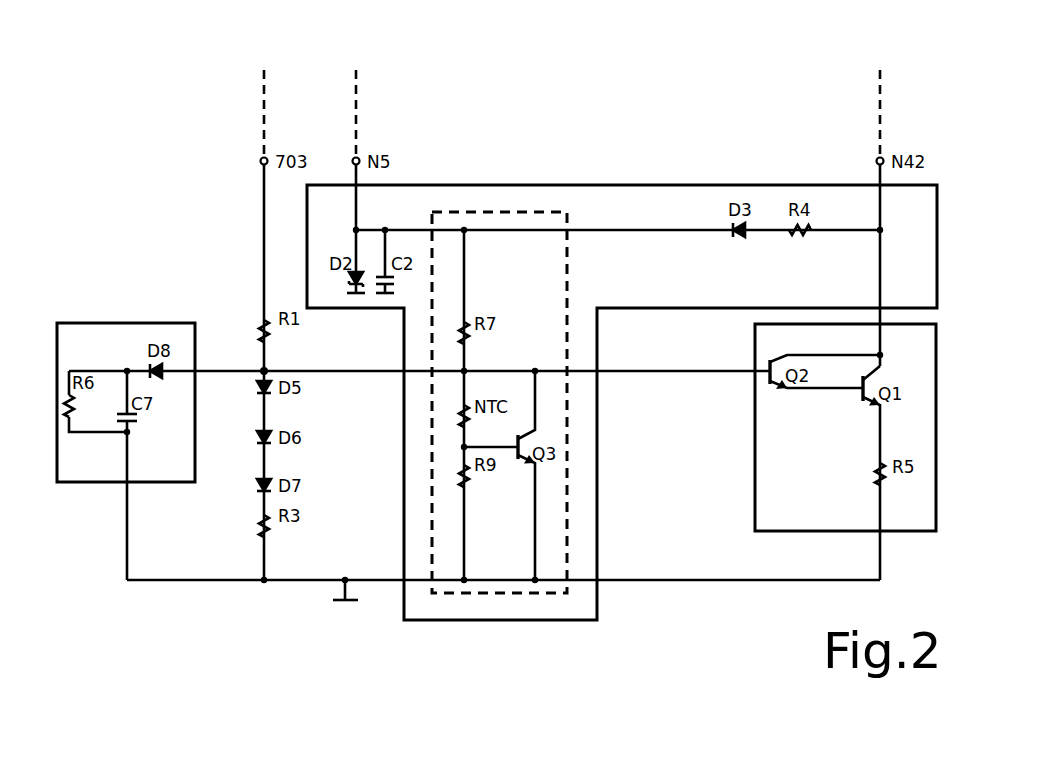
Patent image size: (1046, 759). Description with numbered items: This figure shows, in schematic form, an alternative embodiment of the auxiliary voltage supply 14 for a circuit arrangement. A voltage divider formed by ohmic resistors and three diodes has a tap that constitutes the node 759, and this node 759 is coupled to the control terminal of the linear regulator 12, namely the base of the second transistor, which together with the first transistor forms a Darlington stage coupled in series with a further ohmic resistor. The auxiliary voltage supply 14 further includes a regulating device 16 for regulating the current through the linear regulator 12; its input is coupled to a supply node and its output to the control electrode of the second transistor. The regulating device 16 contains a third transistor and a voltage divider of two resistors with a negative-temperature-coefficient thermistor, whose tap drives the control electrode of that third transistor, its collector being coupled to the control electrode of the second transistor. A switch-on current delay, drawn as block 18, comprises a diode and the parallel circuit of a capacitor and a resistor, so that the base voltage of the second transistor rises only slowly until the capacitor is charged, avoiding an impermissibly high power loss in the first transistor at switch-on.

The linear regulator 12 is at (780, 532).
The auxiliary voltage supply 14 is at (580, 620).
The regulating device 16 is at (540, 212).
The filter circuit 18 is at (163, 323).
The node 759 is at (264, 371).